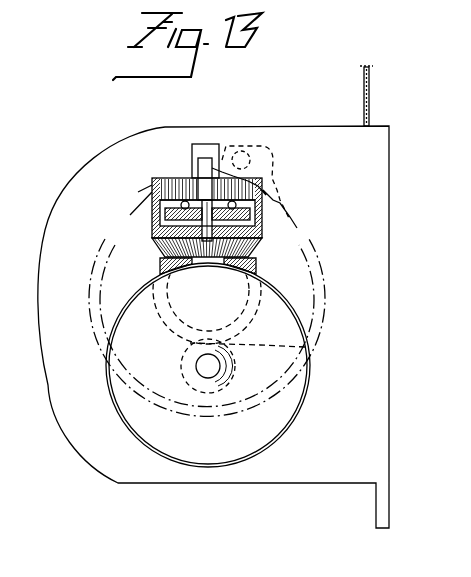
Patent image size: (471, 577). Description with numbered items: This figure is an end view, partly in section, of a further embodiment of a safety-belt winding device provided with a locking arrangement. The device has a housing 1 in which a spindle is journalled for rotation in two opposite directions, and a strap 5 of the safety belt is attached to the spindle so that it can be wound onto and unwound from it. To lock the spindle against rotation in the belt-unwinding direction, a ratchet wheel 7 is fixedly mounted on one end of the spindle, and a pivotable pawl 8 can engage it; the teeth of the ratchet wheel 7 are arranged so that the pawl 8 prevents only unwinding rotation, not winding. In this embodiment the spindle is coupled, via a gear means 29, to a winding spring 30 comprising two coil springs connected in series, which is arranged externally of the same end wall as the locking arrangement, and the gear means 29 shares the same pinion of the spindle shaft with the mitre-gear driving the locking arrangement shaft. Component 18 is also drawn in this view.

The housing 1 is at (71, 421).
The strap 5 is at (371, 93).
The ratchet wheel 7 is at (326, 259).
The pawl 8 is at (262, 143).
The plunger 18 is at (204, 160).
The gear means 29 is at (305, 347).
The winding spring 30 is at (312, 389).